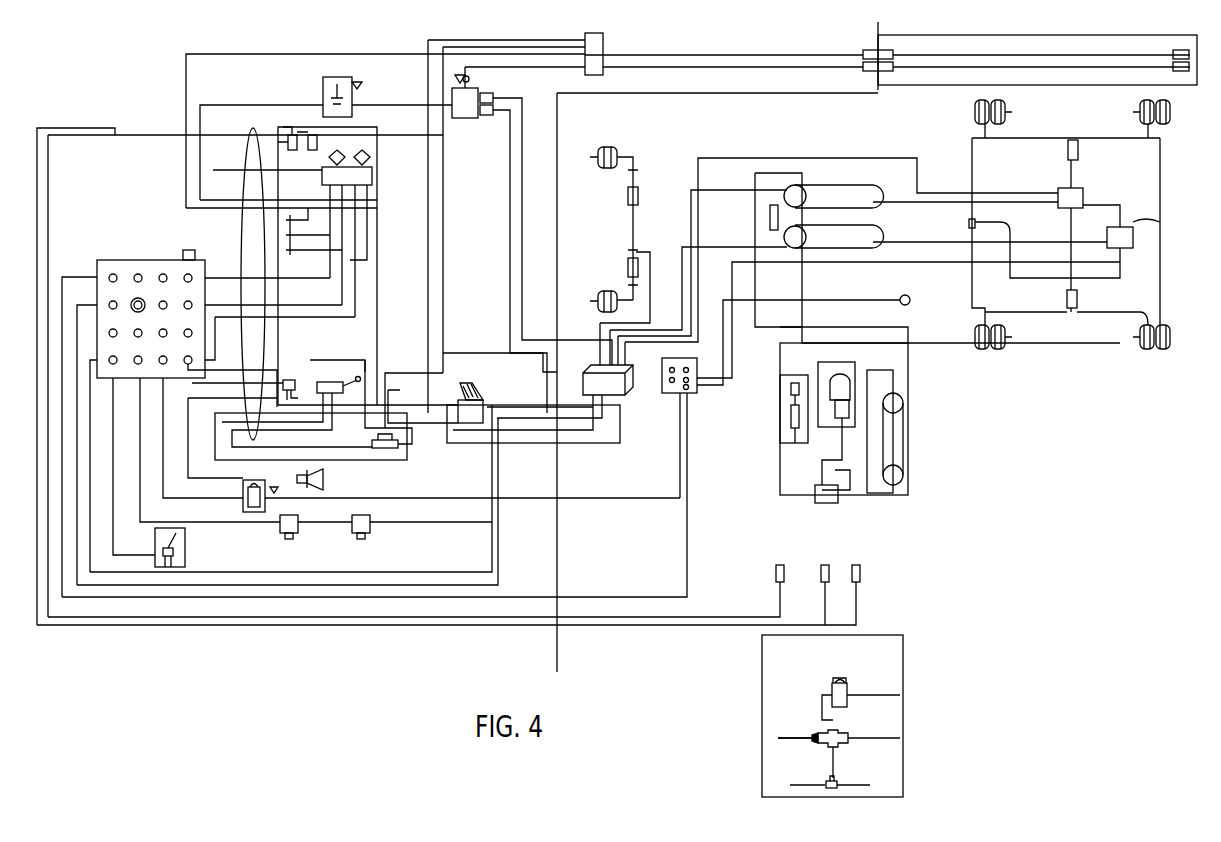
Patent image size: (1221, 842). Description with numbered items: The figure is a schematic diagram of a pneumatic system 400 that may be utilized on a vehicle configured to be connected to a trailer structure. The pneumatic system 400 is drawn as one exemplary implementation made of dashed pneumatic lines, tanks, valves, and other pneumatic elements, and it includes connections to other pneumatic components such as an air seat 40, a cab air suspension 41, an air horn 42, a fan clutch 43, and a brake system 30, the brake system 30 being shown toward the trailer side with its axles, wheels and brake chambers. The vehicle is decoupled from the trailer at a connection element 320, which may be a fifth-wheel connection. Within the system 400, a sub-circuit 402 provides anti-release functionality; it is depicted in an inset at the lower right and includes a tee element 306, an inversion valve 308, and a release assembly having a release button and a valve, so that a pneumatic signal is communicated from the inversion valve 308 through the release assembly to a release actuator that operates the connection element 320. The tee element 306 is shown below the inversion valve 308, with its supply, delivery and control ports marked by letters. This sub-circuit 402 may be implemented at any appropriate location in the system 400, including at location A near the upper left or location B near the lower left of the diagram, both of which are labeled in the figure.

The pneumatic system 400 is at (103, 103).
The brake system 30 is at (640, 158).
The connection element 320 is at (908, 306).
The fan clutch 43 is at (860, 412).
The air seat 40 is at (168, 570).
The air horn 42 is at (317, 492).
The cab air suspension 41 is at (343, 532).
The sub-circuit 402 is at (930, 725).
The inversion valve 308 is at (815, 733).
The tee element 306 is at (837, 780).